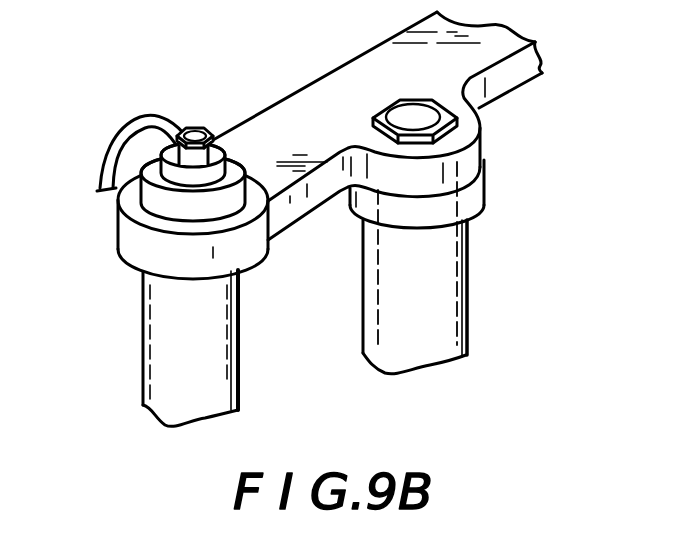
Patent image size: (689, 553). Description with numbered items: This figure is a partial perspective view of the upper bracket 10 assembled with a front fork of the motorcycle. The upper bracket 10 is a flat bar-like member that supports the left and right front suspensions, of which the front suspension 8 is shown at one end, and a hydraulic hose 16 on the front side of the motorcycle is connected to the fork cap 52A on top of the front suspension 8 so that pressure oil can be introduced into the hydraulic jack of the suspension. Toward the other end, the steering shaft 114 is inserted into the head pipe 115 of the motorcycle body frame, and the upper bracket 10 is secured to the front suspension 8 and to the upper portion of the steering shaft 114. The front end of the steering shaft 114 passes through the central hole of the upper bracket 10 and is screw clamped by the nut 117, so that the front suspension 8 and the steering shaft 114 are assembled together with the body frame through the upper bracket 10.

The front suspension 8 is at (143, 360).
The upper bracket 10 is at (317, 110).
The hydraulic hose 16 is at (104, 158).
The fork cap 52A is at (118, 208).
The steering shaft 114 is at (463, 265).
The head pipe 115 is at (470, 331).
The nut 117 is at (484, 99).